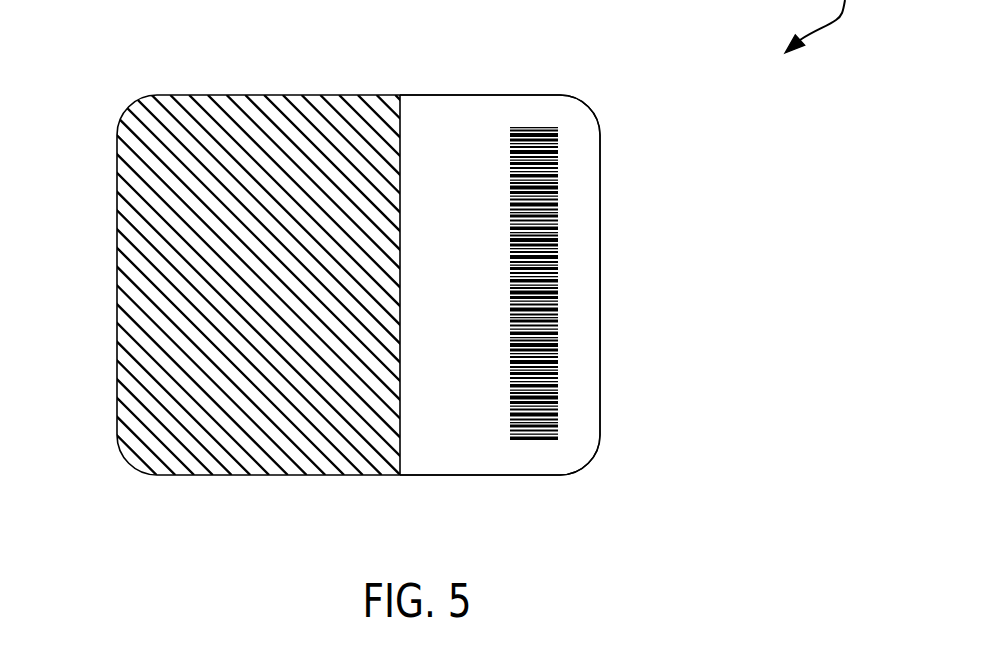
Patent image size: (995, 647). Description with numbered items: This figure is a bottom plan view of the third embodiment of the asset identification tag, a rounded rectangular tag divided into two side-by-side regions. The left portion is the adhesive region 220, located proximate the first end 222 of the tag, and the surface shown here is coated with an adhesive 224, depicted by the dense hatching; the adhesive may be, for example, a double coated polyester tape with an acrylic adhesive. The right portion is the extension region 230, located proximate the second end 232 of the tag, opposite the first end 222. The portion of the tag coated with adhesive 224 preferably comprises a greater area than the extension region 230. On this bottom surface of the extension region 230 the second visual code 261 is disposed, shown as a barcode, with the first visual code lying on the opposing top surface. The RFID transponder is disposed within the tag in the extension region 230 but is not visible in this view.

The adhesive region 220 is at (117, 488).
The first end 222 is at (117, 272).
The adhesive 224 is at (152, 95).
The extension region 230 is at (438, 488).
The second end 232 is at (600, 273).
The second visual code 261 is at (541, 127).